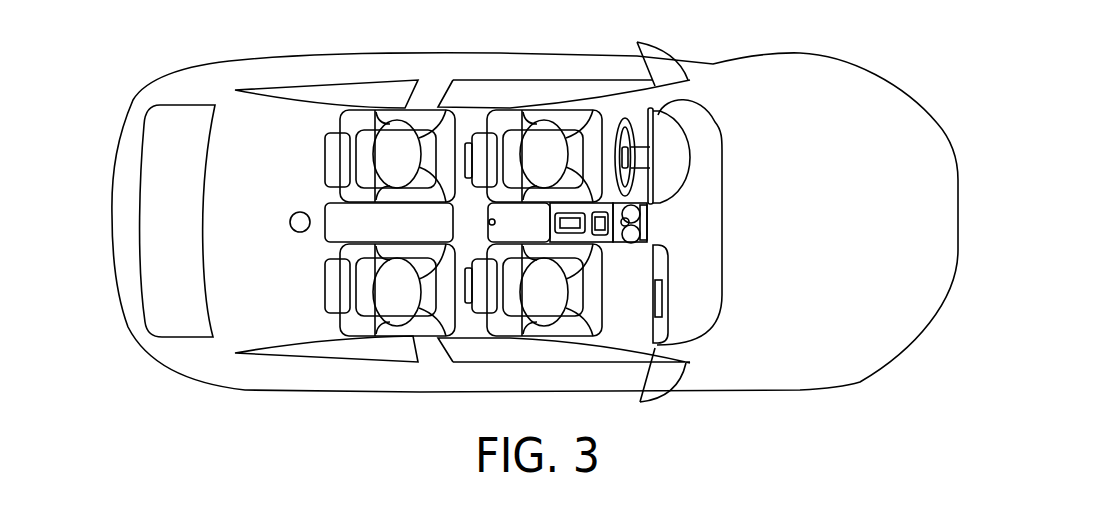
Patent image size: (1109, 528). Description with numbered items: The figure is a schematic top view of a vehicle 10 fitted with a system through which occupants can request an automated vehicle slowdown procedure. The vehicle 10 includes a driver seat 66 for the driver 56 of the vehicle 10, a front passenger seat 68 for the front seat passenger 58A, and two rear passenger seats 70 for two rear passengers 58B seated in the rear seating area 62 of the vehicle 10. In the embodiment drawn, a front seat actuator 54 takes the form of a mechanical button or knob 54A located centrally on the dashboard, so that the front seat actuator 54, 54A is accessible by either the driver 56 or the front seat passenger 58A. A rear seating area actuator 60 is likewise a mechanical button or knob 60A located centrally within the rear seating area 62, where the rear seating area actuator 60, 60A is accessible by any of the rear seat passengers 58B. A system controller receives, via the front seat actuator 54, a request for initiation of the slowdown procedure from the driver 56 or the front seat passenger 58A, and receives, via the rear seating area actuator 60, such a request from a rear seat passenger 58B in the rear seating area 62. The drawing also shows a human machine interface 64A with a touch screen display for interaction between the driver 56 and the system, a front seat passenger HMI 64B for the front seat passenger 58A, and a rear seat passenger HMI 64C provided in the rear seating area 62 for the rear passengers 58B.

The vehicle 10 is at (868, 230).
The front seat actuator 54 is at (717, 210).
The mechanical button or knob 54A is at (628, 220).
The driver 56 is at (558, 165).
The front seat passenger 58A is at (568, 302).
The rear passengers 58B is at (420, 165).
The rear seating area actuator 60 is at (269, 293).
The mechanical button or knob 60A is at (489, 222).
The rear seating area 62 is at (333, 218).
The human machine interface (HMI) 64A is at (647, 227).
The front seat passenger HMI 64B is at (662, 302).
The rear seat passenger HMI 64C is at (471, 142).
The driver seat 66 is at (582, 118).
The front passenger seat 68 is at (577, 327).
The rear passenger seats 70 is at (430, 118).